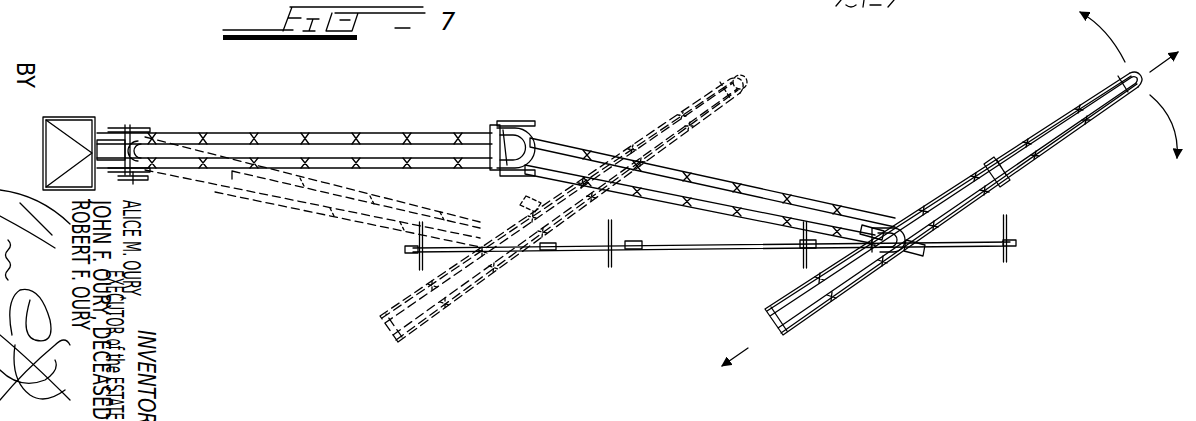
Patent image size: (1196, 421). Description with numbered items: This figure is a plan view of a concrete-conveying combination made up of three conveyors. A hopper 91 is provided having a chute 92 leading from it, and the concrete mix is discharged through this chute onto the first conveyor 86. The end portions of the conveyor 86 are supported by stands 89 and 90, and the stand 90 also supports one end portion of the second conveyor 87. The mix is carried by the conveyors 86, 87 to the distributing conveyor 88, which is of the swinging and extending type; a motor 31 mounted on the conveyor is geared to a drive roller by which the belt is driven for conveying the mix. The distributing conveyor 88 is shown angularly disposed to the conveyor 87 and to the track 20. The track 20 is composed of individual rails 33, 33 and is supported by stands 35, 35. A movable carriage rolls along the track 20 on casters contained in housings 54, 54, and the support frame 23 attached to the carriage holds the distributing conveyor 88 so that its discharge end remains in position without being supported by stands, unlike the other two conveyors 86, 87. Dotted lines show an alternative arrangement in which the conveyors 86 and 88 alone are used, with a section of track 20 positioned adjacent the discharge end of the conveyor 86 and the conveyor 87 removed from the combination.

The track 20 is at (698, 250).
The support frame 23 is at (978, 168).
The motor 31 is at (897, 226).
The rails 33 is at (650, 244).
The stands 35 is at (417, 262).
The caster housings 54 is at (872, 225).
The conveyor 86 is at (338, 133).
The conveyor 87 is at (728, 184).
The distributing conveyor 88 is at (1060, 152).
The stand 89 is at (133, 184).
The stand 90 is at (530, 121).
The hopper 91 is at (93, 128).
The chute 92 is at (107, 143).